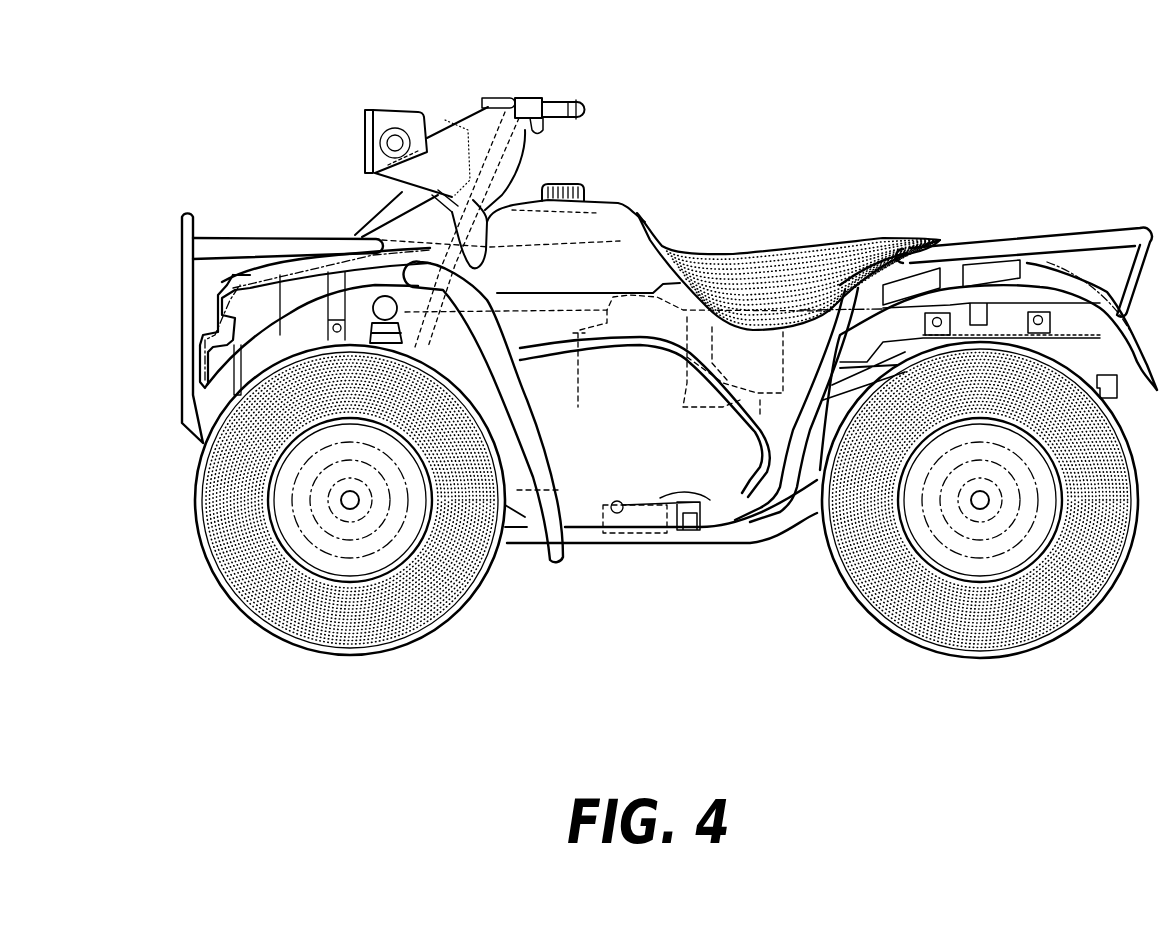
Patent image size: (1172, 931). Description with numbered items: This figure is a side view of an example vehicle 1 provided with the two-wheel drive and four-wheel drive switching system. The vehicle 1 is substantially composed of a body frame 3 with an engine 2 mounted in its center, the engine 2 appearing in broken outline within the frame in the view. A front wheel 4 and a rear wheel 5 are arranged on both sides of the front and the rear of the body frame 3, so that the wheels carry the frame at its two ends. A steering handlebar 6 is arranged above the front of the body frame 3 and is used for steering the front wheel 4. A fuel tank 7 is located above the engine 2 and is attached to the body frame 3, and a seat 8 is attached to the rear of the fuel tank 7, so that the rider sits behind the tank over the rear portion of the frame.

The vehicle 1 is at (620, 197).
The engine 2 is at (727, 487).
The body frame 3 is at (626, 546).
The front wheel 4 is at (200, 565).
The rear wheel 5 is at (858, 607).
The steering handlebar 6 is at (540, 102).
The fuel tank 7 is at (594, 197).
The seat 8 is at (790, 252).